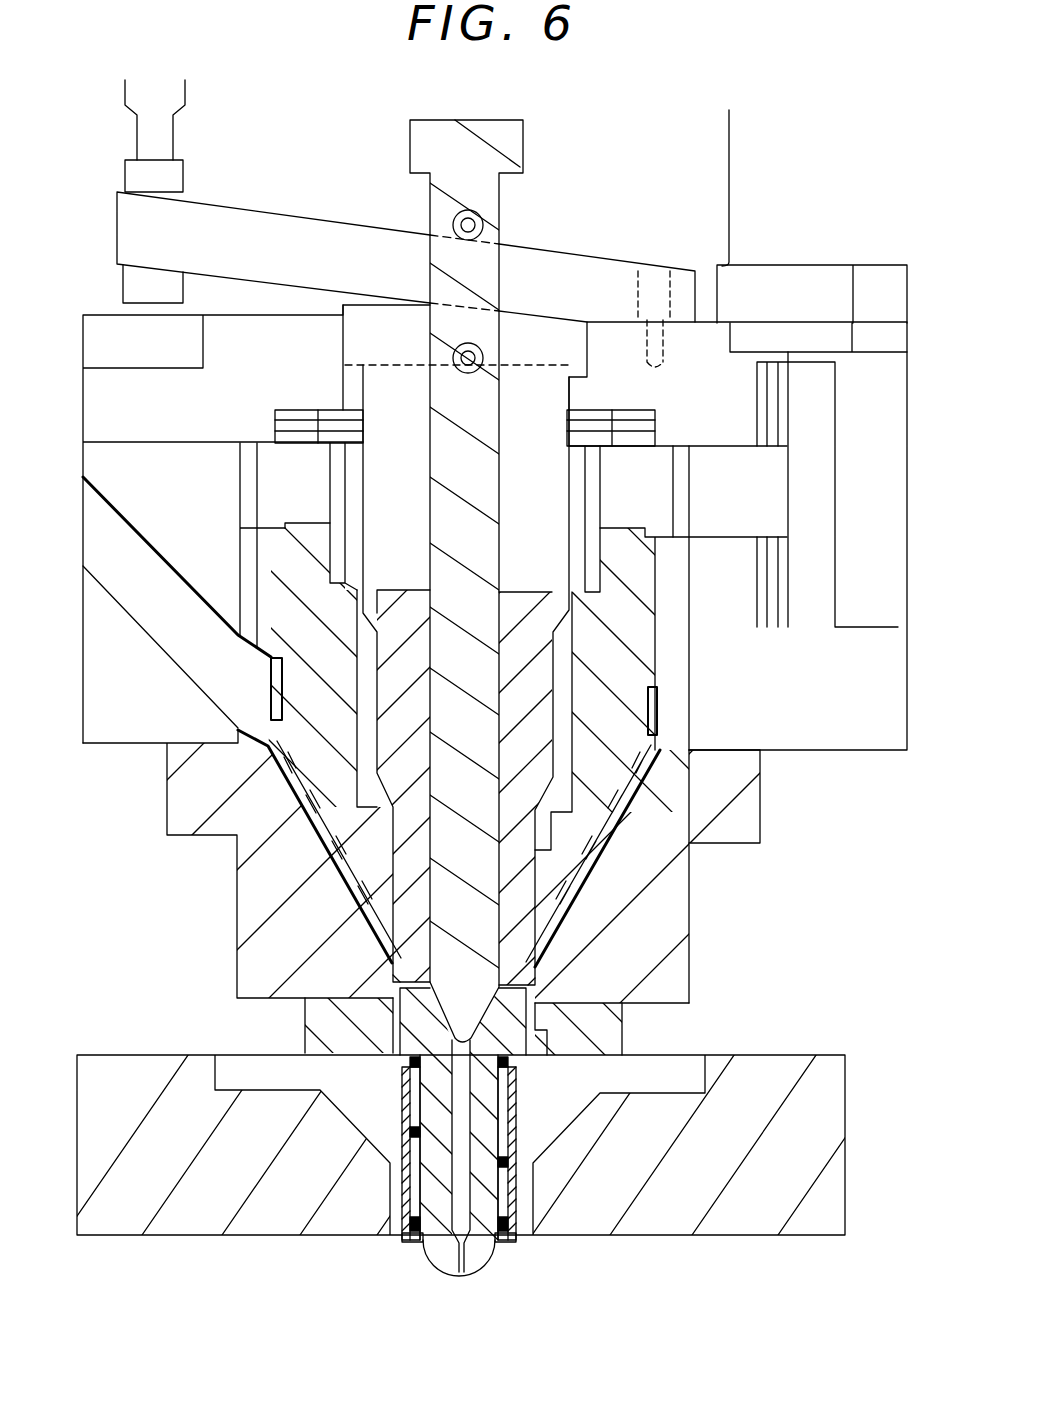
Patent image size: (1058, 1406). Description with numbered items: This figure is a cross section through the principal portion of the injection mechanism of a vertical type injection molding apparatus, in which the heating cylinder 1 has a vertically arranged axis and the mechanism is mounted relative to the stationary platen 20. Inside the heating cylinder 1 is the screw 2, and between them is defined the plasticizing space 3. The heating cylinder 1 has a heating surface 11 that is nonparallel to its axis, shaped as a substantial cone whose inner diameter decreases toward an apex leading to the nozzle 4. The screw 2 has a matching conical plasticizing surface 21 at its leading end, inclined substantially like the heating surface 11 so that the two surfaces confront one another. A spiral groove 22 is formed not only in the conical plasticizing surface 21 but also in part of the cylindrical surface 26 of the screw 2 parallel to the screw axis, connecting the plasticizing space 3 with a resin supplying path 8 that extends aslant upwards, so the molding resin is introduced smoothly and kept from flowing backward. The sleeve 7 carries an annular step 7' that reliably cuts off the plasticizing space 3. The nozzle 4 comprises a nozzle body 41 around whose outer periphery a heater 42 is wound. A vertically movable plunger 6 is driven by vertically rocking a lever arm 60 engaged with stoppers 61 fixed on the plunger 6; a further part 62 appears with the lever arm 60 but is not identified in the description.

The heating cylinder 1 is at (213, 907).
The screw 2 is at (618, 742).
The plasticizing space 3 is at (280, 785).
The nozzle 4 is at (417, 1258).
The plunger 6 is at (485, 478).
The sleeve 7 is at (520, 694).
The annular step 7' is at (480, 1006).
The resin supplying path 8 is at (147, 603).
The heating surface 11 is at (327, 917).
The stationary platen 20 is at (117, 1235).
The plasticizing surface 21 is at (689, 858).
The spiral groove 22 is at (273, 692).
The cylindrical surface 26 is at (270, 593).
The nozzle body 41 is at (480, 1243).
The heater 42 is at (403, 1222).
The lever arm 60 is at (300, 242).
The stoppers 61 is at (483, 355).
The actuator connector 62 is at (167, 232).